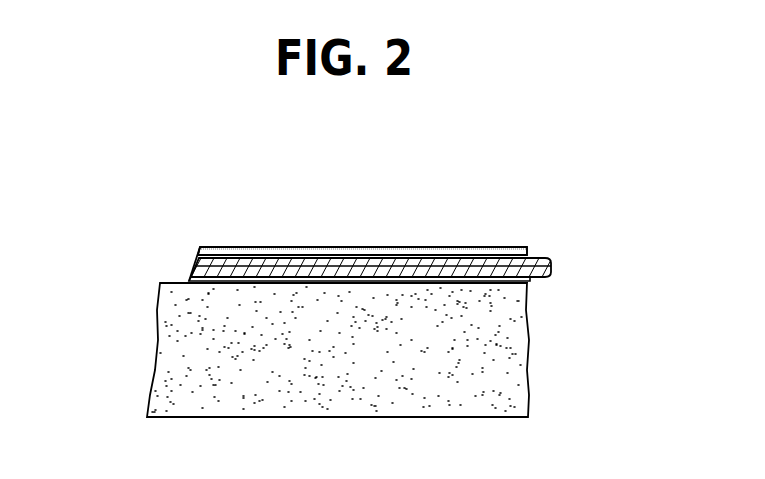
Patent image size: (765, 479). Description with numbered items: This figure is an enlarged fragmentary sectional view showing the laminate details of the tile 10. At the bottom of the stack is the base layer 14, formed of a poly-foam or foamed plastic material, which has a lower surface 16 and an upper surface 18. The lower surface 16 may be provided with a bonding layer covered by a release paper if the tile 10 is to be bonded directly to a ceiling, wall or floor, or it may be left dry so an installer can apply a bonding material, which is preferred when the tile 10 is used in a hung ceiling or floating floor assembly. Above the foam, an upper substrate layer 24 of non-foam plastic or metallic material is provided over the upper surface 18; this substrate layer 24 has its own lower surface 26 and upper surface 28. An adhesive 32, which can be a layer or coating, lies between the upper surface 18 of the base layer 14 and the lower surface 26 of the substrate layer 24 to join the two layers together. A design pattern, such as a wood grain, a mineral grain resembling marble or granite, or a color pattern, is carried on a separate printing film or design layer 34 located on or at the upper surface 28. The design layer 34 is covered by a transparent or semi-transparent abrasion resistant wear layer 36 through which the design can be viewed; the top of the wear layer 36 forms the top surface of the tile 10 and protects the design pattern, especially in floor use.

The tile 10 is at (320, 227).
The base layer 14 is at (208, 395).
The lower surface 16 is at (510, 420).
The upper surface 18 is at (173, 282).
The upper substrate layer 24 is at (553, 268).
The lower surface 26 is at (533, 281).
The upper surface 28 is at (540, 258).
The adhesive 32 is at (527, 288).
The design layer 34 is at (197, 259).
The wear layer 36 is at (402, 246).